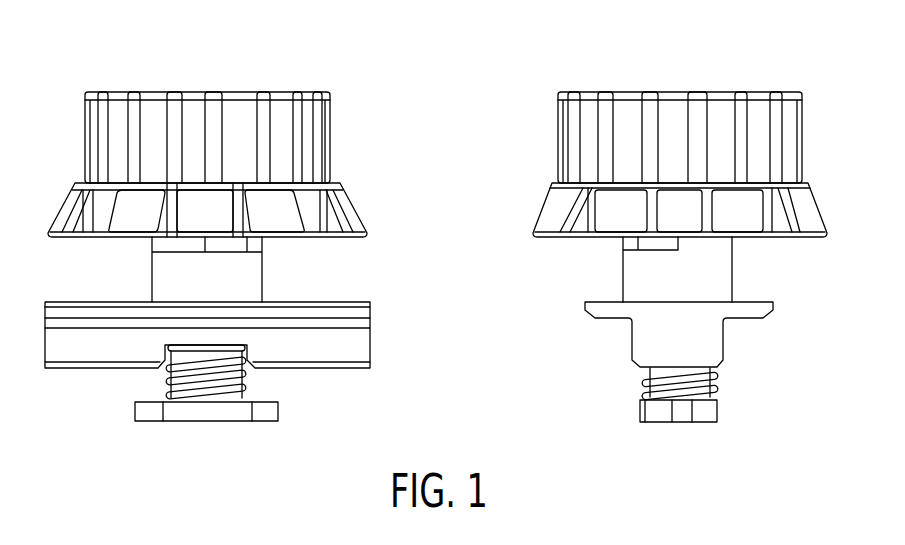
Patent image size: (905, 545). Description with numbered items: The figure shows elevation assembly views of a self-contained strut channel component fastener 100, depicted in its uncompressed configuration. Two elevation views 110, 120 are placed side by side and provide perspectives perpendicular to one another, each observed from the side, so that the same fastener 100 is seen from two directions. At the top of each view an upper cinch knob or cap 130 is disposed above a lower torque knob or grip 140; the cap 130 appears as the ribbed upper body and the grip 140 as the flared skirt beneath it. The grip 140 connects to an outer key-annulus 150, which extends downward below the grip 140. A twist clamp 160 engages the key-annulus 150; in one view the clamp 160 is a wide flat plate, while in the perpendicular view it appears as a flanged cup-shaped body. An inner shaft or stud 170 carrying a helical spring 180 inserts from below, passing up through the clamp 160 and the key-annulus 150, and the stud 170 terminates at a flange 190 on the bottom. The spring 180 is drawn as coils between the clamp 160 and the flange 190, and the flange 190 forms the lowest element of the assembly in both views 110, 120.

The strut fastener 100 is at (382, 137).
The elevation view 110 is at (37, 63).
The elevation view 120 is at (823, 63).
The cinch knob 130 is at (802, 140).
The grip 140 is at (66, 203).
The key-annulus 150 is at (733, 281).
The twist clamp 160 is at (369, 338).
The stud 170 is at (174, 369).
The helical spring 180 is at (720, 376).
The flange 190 is at (278, 410).